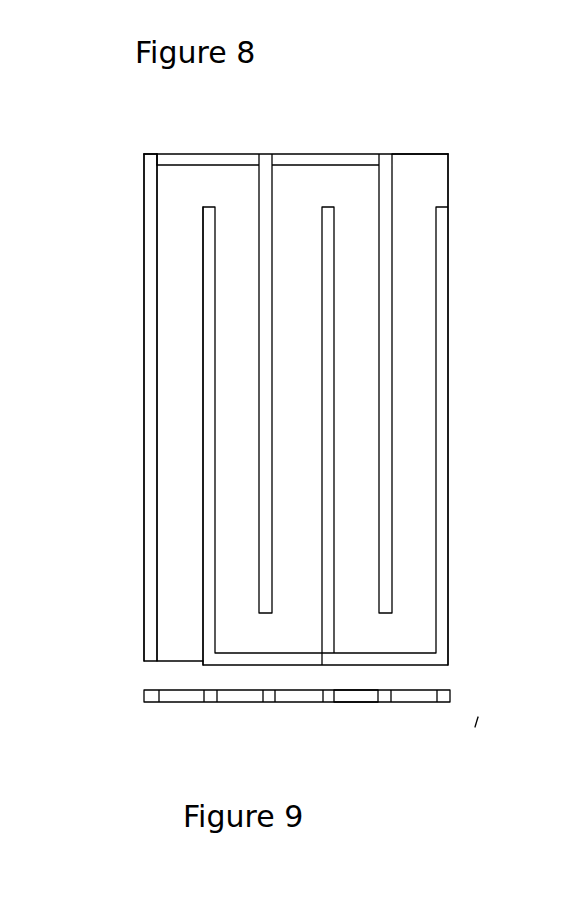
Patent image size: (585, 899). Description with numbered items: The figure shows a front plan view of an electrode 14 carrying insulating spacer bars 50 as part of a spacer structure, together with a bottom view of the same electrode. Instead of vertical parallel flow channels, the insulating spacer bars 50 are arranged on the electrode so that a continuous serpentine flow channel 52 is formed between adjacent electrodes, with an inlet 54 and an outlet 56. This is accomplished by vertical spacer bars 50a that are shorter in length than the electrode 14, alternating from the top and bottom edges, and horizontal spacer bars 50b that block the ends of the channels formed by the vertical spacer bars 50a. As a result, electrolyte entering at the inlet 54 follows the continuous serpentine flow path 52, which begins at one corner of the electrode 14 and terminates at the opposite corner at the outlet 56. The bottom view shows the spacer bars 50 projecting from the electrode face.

In FIG. 8, the nickel oxide electrode 14 is at (173, 470).
In FIG. 9, the nickel oxide electrode 14 is at (383, 700).
In FIG. 8, the insulating spacer bar 50 is at (145, 310).
In FIG. 9, the insulating spacer bar 50 is at (440, 693).
In FIG. 8, the vertical spacer bar 50a is at (383, 368).
In FIG. 8, the horizontal spacer bar 50b is at (357, 155).
In FIG. 8, the serpentine flow channel 52 is at (185, 377).
In FIG. 8, the inlet 54 is at (172, 638).
In FIG. 8, the outlet 56 is at (157, 158).